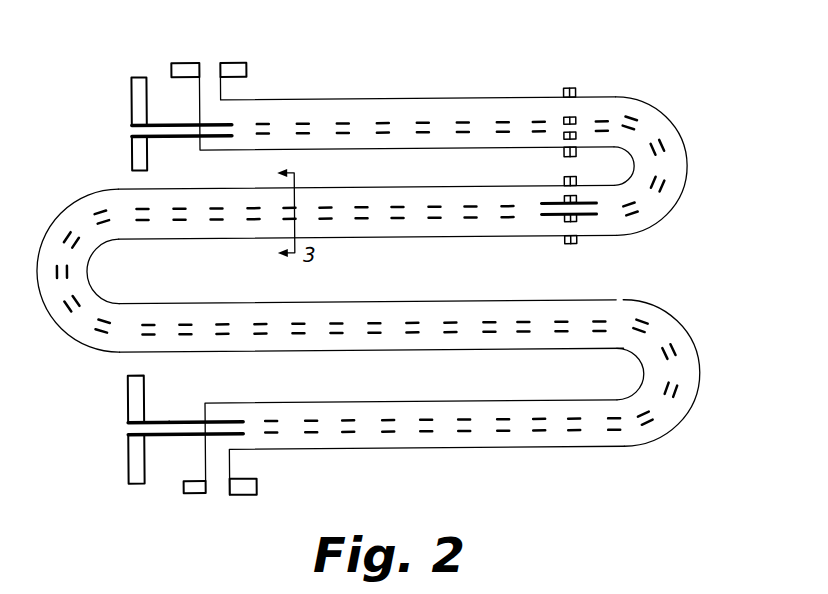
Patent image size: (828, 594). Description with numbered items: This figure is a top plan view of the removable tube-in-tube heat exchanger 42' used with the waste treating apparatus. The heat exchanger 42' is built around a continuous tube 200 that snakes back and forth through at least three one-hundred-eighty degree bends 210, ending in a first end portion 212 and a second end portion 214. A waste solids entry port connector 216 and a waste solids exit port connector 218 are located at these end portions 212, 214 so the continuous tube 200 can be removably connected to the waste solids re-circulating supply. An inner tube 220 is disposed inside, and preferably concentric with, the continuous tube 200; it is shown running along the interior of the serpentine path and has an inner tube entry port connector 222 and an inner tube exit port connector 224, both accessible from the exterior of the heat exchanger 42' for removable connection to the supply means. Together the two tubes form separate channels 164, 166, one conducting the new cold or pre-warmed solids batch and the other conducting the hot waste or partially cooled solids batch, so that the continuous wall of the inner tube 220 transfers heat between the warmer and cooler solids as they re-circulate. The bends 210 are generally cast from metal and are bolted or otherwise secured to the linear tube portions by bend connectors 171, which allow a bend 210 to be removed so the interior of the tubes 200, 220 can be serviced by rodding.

The tube-in-tube heat exchanger 42' is at (719, 73).
The channel 164 is at (685, 340).
The channel 166 is at (168, 419).
The bend connectors 171 is at (578, 121).
The continuous tube 200 is at (403, 449).
The 180 degree bends 210 is at (692, 187).
The first end portion 212 is at (203, 444).
The second end portion 214 is at (226, 76).
The waste solids entry port connector 216 is at (200, 62).
The waste solids exit port connector 218 is at (204, 492).
The inner tube 220 is at (472, 220).
The inner tube entry port connector 222 is at (125, 436).
The inner tube exit port connector 224 is at (133, 115).